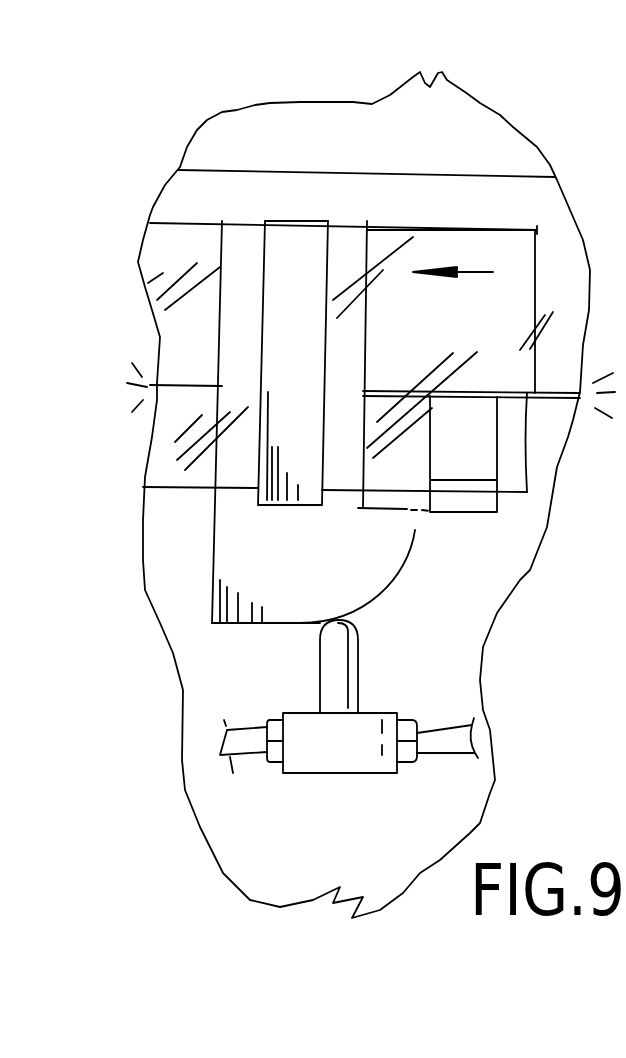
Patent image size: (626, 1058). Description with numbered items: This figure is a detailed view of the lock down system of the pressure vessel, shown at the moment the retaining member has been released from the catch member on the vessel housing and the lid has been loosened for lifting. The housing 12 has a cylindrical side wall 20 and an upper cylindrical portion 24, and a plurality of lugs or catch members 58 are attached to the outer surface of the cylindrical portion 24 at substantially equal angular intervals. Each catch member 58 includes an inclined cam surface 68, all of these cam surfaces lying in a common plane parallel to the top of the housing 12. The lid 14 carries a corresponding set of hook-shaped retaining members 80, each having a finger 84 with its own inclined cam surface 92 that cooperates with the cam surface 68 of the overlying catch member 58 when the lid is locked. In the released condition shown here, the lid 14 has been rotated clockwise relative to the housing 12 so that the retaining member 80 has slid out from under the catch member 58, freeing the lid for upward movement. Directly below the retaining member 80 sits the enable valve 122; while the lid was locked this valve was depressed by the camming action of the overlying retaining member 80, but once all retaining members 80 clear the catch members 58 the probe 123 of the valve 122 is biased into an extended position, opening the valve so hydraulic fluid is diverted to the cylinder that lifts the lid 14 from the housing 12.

The housing 12 is at (178, 655).
The lid 14 is at (216, 142).
The cylindrical side wall 20 is at (280, 840).
The upper cylindrical portion 24 is at (160, 440).
The catch member 58 is at (488, 435).
The inclined cam surface 68 is at (468, 505).
The retaining member 80 is at (227, 517).
The finger 84 is at (373, 580).
The inclined cam surface 92 is at (410, 512).
The enable valve 122 is at (362, 775).
The probe 123 is at (358, 663).